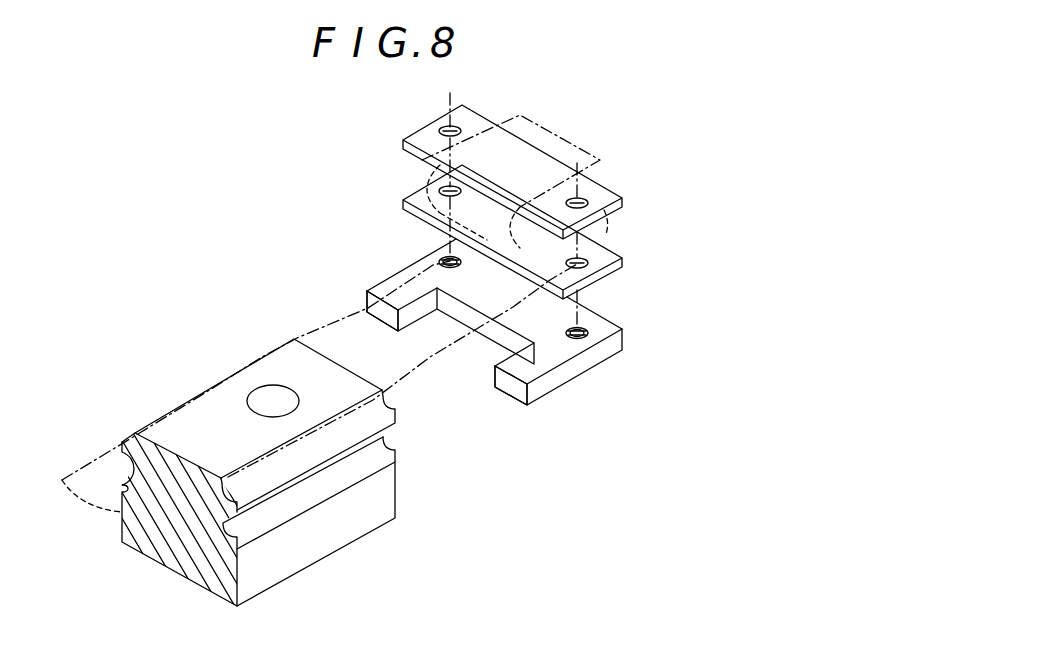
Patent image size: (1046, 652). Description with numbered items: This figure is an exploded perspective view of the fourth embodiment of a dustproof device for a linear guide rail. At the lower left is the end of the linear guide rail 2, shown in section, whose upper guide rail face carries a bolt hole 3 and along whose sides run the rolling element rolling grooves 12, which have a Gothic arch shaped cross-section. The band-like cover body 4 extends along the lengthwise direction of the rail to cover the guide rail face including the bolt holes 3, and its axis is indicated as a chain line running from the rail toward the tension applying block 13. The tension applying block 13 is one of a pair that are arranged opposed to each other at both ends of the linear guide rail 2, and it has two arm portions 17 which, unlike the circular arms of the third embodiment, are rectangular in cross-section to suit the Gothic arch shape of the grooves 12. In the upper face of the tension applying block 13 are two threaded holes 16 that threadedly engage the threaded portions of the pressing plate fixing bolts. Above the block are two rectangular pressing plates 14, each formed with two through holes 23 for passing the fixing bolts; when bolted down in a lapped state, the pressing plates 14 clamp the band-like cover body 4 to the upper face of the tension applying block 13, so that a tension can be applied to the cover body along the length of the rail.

The linear guide rail 2 is at (353, 518).
The bolt hole 3 is at (272, 385).
The band-like cover body 4 is at (430, 357).
The rolling element rolling groove 12 is at (383, 400).
The tension applying block 13 is at (593, 357).
The pressing plate 14 is at (622, 199).
The threaded hole 16 is at (580, 327).
The arm portion 17 is at (367, 310).
The through hole 23 is at (583, 201).